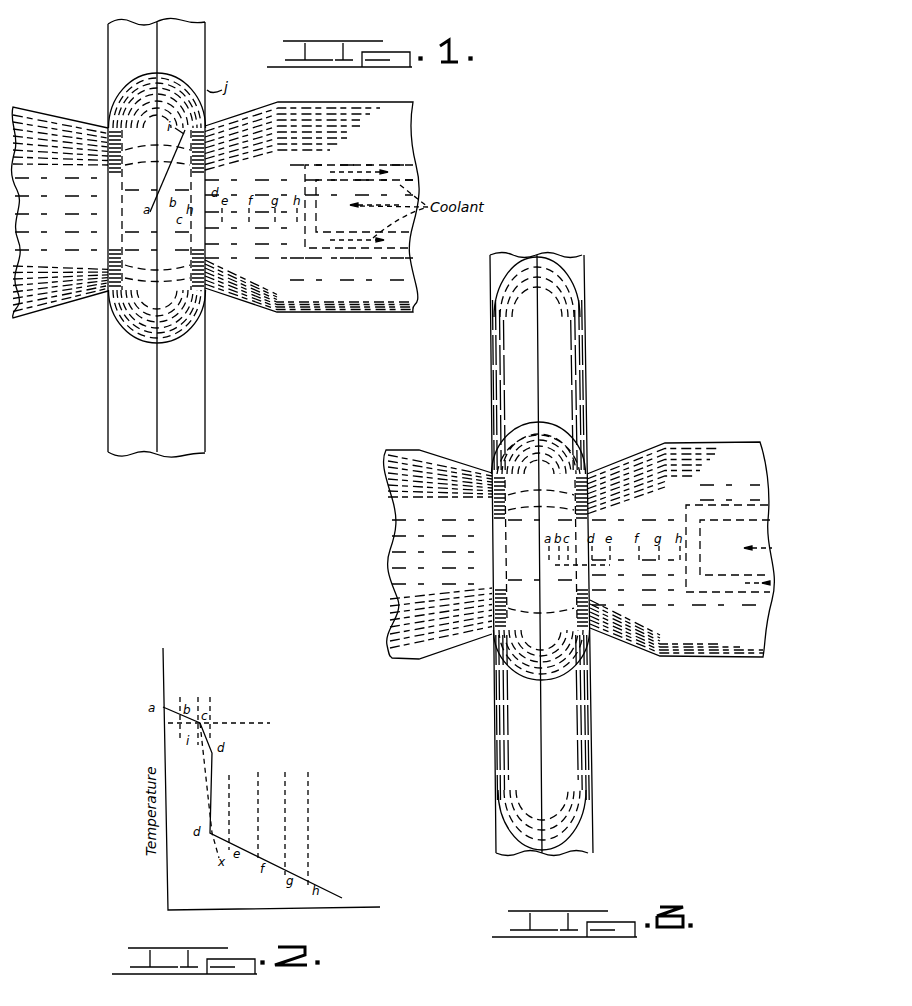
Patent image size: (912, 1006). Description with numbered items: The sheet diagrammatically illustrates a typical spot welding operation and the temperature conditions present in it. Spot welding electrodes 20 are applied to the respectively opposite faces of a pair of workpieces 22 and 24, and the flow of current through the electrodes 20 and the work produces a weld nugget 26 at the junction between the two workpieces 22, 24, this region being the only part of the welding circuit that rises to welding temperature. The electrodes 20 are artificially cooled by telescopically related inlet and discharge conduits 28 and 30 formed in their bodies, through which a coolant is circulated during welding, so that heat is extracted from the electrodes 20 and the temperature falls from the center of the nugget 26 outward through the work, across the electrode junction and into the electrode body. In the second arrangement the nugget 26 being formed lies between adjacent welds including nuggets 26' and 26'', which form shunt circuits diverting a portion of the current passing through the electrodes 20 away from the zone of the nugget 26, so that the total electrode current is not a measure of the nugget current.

In FIG. 1, the spot welding electrodes 20 is at (72, 88).
In FIG. 3, the spot welding electrodes 20 is at (388, 498).
In FIG. 1, the workpiece 22 is at (107, 30).
In FIG. 3, the workpiece 22 is at (491, 372).
In FIG. 1, the workpiece 24 is at (195, 35).
In FIG. 3, the workpiece 24 is at (577, 362).
In FIG. 1, the weld nugget 26 is at (174, 196).
In FIG. 3, the weld nugget 26 is at (564, 551).
In FIG. 3, the nugget 26' is at (576, 287).
In FIG. 3, the nugget 26'' is at (573, 820).
In FIG. 1, the inlet conduit 28 is at (400, 187).
In FIG. 3, the inlet conduit 28 is at (717, 523).
In FIG. 1, the discharge conduit 30 is at (393, 163).
In FIG. 3, the discharge conduit 30 is at (750, 497).